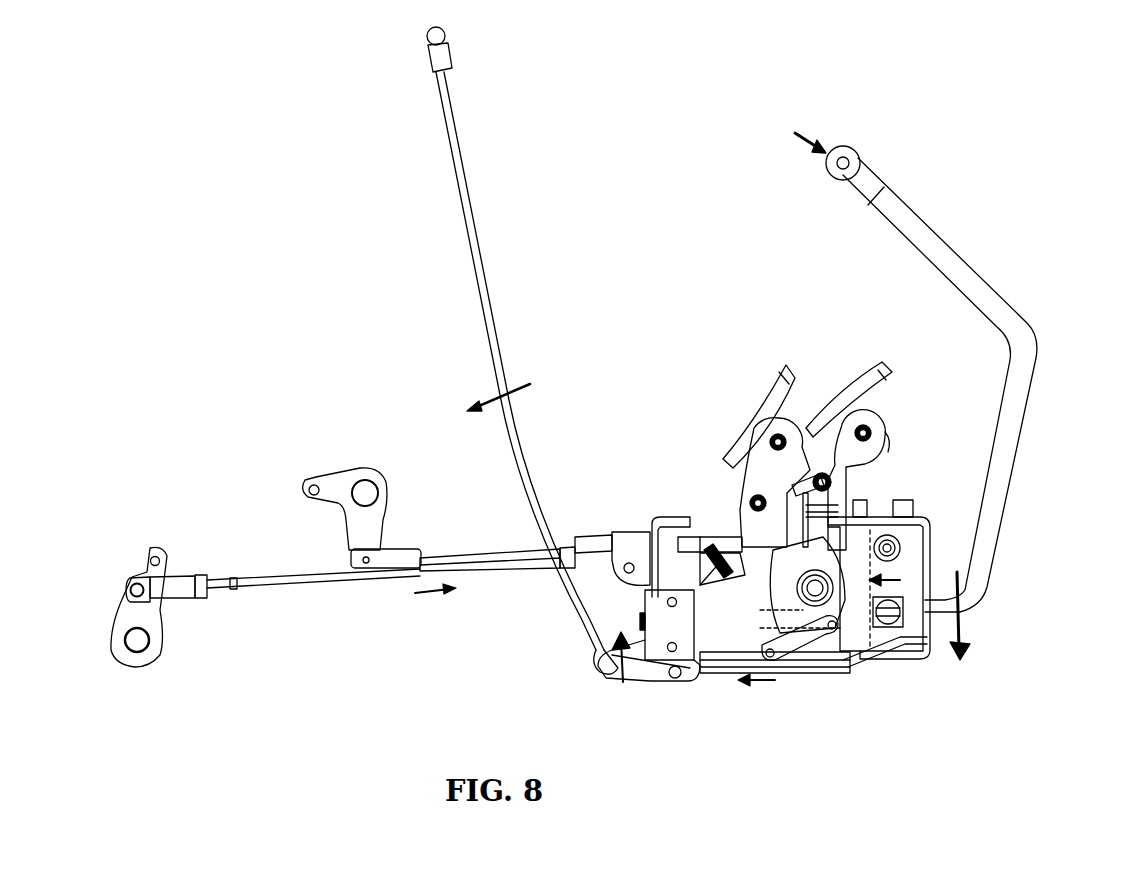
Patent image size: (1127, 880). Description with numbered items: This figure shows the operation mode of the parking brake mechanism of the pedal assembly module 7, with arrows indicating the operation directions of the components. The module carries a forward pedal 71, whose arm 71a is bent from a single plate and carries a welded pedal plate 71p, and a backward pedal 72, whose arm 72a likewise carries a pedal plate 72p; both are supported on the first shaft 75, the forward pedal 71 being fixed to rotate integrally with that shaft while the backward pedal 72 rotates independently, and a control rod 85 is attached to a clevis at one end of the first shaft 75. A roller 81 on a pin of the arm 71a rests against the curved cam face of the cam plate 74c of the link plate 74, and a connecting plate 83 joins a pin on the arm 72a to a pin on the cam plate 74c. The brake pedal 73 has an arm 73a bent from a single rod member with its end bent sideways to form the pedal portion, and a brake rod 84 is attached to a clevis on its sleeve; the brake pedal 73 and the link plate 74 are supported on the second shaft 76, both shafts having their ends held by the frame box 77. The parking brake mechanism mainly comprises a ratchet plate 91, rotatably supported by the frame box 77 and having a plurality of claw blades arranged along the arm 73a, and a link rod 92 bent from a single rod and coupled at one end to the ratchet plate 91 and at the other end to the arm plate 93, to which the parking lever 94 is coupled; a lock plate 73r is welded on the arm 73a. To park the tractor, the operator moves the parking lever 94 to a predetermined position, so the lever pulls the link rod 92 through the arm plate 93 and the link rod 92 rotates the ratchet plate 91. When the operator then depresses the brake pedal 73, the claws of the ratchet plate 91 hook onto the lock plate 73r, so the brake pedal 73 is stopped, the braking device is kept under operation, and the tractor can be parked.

The pedal assembly module 7 is at (1050, 180).
The forward pedal 71 is at (855, 358).
The arm 71a is at (895, 440).
The pedal plate 71p is at (880, 362).
The backward pedal 72 is at (757, 365).
The arm 72a is at (805, 420).
The pedal plate 72p is at (779, 368).
The brake pedal 73 is at (842, 128).
The arm 73a is at (1036, 343).
The lock plate 73r is at (872, 500).
The link plate 74 is at (692, 672).
The cam plate 74c is at (668, 598).
The first shaft 75 is at (855, 673).
The second shaft 76 is at (740, 672).
The frame box 77 is at (890, 517).
The roller 81 is at (795, 660).
The connecting plate 83 is at (810, 665).
The brake rod 84 is at (390, 583).
The control rod 85 is at (474, 546).
The ratchet plate 91 is at (905, 652).
The link rod 92 is at (876, 652).
The arm plate 93 is at (644, 685).
The parking lever 94 is at (472, 182).